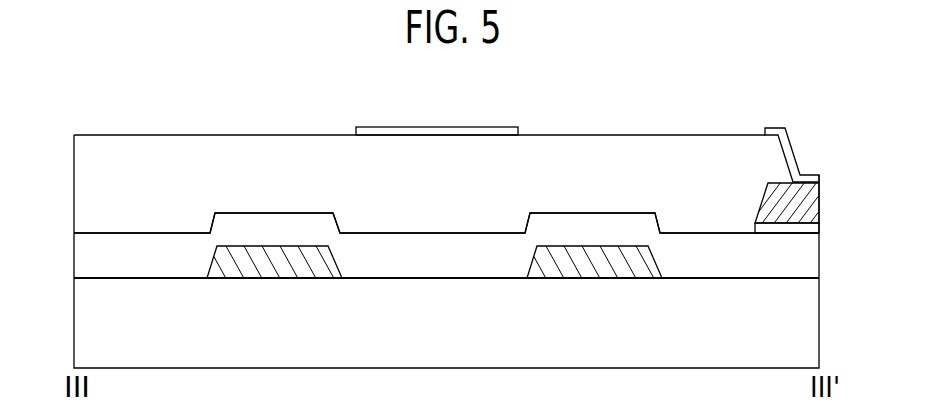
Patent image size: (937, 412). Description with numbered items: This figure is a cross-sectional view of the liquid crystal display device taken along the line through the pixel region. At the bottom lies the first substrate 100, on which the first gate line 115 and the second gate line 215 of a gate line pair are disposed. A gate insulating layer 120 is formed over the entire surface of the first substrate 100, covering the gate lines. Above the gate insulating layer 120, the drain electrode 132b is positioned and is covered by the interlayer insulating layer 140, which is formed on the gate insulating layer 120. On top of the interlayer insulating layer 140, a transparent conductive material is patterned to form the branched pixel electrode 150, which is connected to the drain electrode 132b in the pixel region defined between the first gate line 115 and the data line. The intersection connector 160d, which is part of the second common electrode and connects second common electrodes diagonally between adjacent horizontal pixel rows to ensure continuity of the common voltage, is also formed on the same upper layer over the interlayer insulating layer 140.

The first substrate 100 is at (793, 330).
The first gate line 115 is at (242, 262).
The gate insulating layer 120 is at (100, 256).
The second gate line 215 is at (620, 267).
The interlayer insulating layer 140 is at (100, 166).
The drain electrode 132b is at (796, 200).
The pixel electrode 150 is at (776, 127).
The intersection connector 160d is at (462, 127).